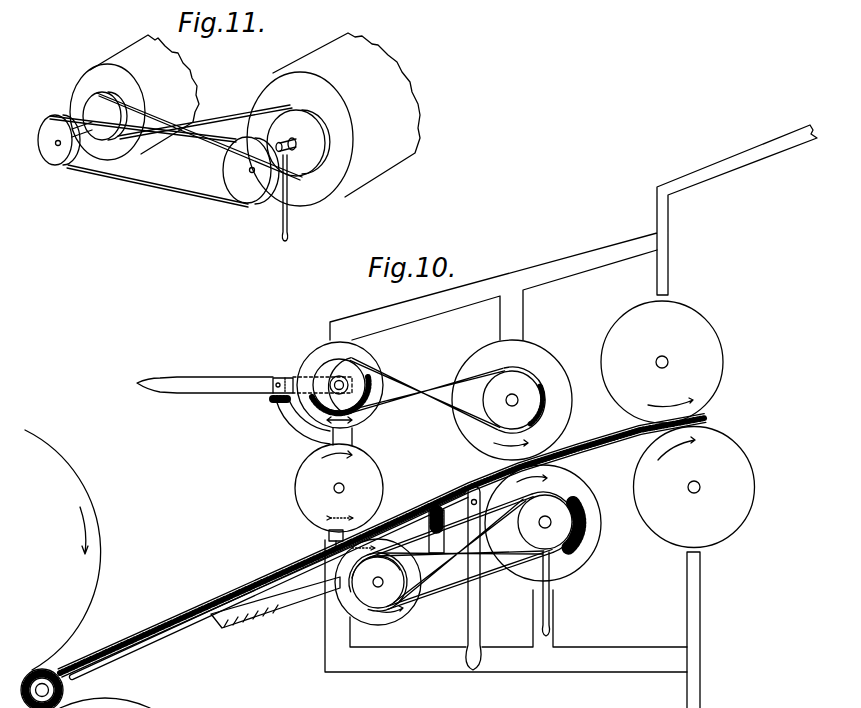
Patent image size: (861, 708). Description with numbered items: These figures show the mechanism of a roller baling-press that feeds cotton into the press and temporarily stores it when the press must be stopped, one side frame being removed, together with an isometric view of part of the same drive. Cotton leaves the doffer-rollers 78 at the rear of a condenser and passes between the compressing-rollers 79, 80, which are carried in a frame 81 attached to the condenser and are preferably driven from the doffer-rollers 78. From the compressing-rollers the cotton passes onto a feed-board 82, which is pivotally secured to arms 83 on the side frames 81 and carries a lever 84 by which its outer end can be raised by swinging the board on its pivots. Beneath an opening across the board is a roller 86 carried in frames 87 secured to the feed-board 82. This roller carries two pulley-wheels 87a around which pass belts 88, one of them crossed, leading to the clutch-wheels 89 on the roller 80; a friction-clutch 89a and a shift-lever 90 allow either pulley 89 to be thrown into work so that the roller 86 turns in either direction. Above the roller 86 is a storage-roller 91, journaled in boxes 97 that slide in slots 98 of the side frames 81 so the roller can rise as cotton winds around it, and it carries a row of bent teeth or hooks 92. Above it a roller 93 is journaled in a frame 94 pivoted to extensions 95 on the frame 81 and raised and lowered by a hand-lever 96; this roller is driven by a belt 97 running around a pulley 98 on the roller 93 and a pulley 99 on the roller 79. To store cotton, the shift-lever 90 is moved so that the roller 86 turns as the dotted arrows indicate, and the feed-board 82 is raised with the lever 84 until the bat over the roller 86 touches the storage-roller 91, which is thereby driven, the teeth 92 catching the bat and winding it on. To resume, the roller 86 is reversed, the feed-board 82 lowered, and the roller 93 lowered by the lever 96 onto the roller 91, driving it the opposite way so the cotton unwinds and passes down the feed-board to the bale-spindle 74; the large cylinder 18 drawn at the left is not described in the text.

In FIG. 10, the impression cylinder 18 is at (63, 550).
In FIG. 10, the bale spindle 74 is at (63, 690).
In FIG. 10, the doffer-rollers 78 is at (678, 424).
In FIG. 10, the compressing-roller 79 is at (512, 400).
In FIG. 11, the compressing-roller 80 is at (333, 119).
In FIG. 10, the compressing-roller 80 is at (543, 523).
In FIG. 10, the frame 81 is at (560, 260).
In FIG. 10, the feed-board 82 is at (143, 648).
In FIG. 10, the arms 83 is at (483, 498).
In FIG. 10, the lever 84 is at (487, 578).
In FIG. 11, the roller 86 is at (134, 97).
In FIG. 10, the roller 86 is at (405, 603).
In FIG. 10, the frames 87 is at (302, 597).
In FIG. 11, the pulley-wheels 87a is at (88, 107).
In FIG. 10, the pulley-wheels 87a is at (372, 595).
In FIG. 11, the belts 88 is at (213, 143).
In FIG. 10, the belts 88 is at (500, 519).
In FIG. 11, the clutch-wheels 89 is at (314, 147).
In FIG. 10, the clutch-wheels 89 is at (545, 522).
In FIG. 11, the friction-clutch 89a is at (296, 164).
In FIG. 11, the shift-lever 90 is at (289, 221).
In FIG. 10, the shift-lever 90 is at (549, 603).
In FIG. 10, the storage-roller 91 is at (339, 488).
In FIG. 10, the bent teeth or hooks 92 is at (330, 537).
In FIG. 10, the roller 93 is at (368, 362).
In FIG. 10, the frame 94 is at (295, 378).
In FIG. 10, the extensions 95 is at (285, 416).
In FIG. 10, the hand-lever 96 is at (223, 380).
In FIG. 10, the belt 97 is at (430, 386).
In FIG. 10, the pulley 98 is at (363, 405).
In FIG. 10, the pulley 99 is at (513, 400).